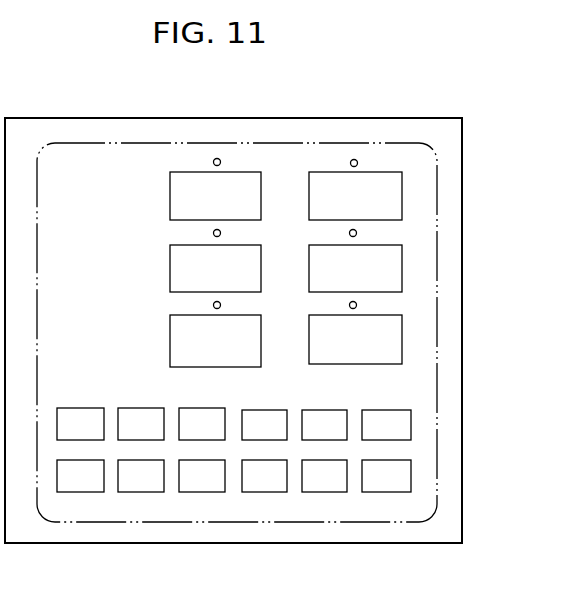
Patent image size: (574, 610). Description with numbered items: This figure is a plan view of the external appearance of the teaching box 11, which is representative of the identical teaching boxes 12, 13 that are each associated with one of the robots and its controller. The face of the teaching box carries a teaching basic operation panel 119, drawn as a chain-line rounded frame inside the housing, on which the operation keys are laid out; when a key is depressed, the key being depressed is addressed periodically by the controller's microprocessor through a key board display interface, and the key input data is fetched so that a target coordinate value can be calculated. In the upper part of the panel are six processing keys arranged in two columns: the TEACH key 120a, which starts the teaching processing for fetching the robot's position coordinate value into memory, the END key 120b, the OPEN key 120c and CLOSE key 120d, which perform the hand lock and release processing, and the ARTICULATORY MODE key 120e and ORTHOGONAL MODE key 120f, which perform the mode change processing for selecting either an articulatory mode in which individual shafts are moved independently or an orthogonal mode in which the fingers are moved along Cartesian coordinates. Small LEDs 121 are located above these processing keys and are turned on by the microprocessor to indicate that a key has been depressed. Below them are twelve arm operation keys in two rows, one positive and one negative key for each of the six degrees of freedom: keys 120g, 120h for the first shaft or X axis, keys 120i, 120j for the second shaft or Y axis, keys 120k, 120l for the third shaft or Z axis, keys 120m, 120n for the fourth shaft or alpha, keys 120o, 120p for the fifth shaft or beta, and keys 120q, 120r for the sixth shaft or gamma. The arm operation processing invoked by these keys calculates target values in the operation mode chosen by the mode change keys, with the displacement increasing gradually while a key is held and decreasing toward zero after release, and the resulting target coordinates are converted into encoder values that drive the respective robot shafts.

The teaching box 11 is at (233, 307).
The teaching box 12 is at (233, 330).
The teaching box 13 is at (350, 118).
The teaching basic operation panel 119 is at (430, 296).
The LEDs 121 is at (351, 160).
The teaching processing key 120a is at (170, 202).
The end key 120b is at (402, 191).
The hand lock and release processing key 120c is at (170, 266).
The hand lock and release processing key 120d is at (402, 259).
The mode change processing key 120e is at (261, 341).
The mode change processing key 120f is at (402, 337).
The arm operation processing key 120g is at (80, 408).
The arm operation processing key 120h is at (85, 492).
The arm operation processing key 120i is at (140, 408).
The arm operation processing key 120j is at (145, 492).
The arm operation processing key 120k is at (200, 408).
The arm operation processing key 120l is at (210, 492).
The arm operation processing key 120m is at (283, 410).
The arm operation processing key 120n is at (272, 492).
The arm operation processing key 120o is at (345, 410).
The arm operation processing key 120p is at (333, 492).
The arm operation processing key 120q is at (411, 422).
The arm operation processing key 120r is at (390, 492).